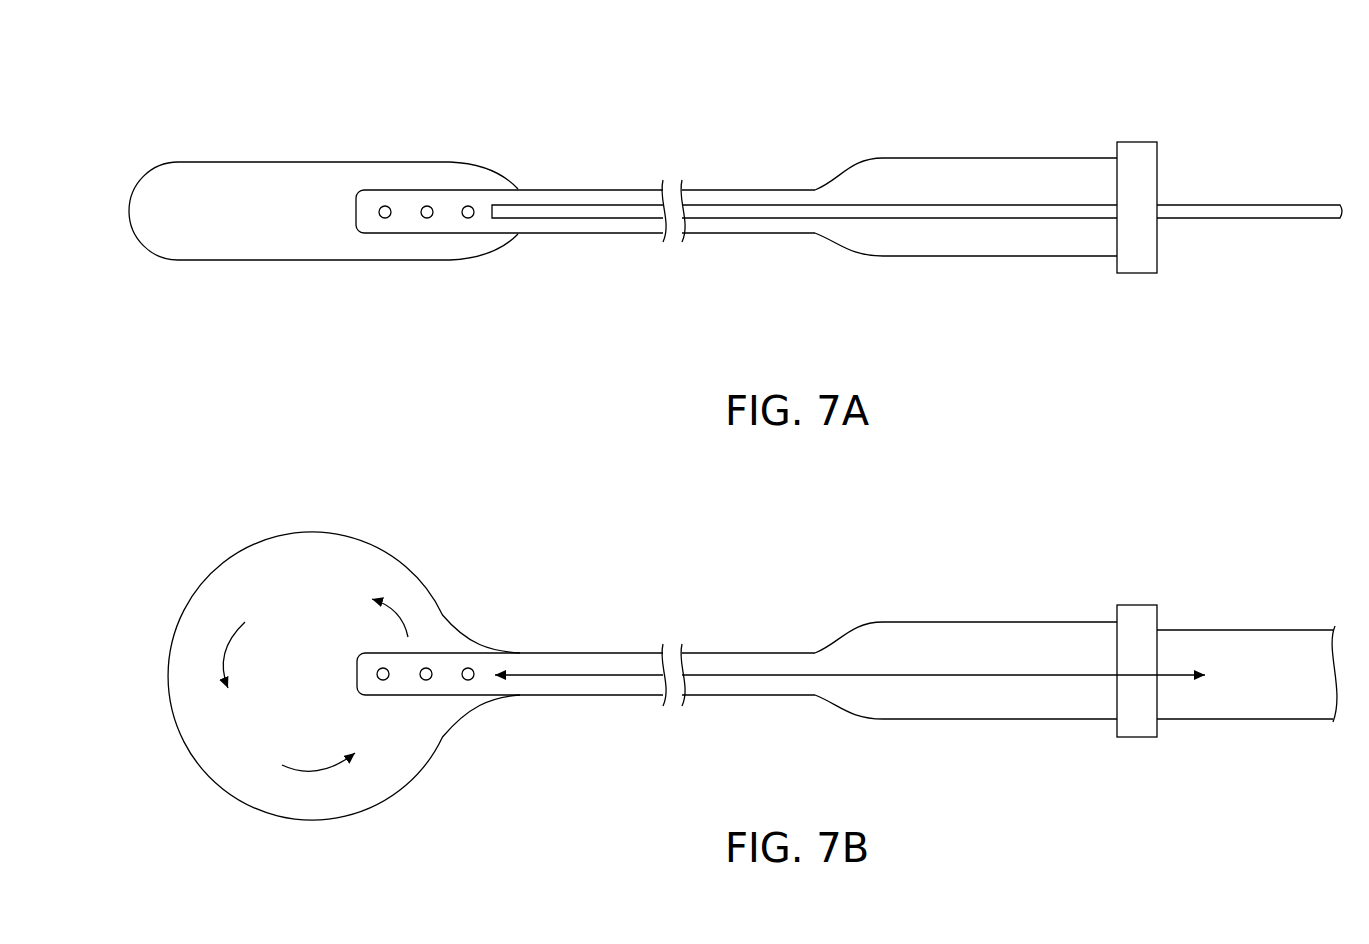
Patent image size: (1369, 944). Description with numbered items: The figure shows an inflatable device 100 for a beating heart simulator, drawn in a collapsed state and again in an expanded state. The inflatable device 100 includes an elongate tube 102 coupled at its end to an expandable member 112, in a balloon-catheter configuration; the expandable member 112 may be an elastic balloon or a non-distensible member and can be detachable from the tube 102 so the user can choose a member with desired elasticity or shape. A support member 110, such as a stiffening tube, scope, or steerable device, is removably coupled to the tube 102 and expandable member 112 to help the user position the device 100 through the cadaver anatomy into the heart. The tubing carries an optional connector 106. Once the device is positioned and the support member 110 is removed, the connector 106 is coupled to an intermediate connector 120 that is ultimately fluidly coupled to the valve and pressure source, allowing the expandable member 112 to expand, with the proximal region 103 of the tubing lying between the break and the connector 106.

In FIG. 7A, the inflatable device 100 is at (806, 106).
In FIG. 7B, the inflatable device 100 is at (812, 579).
In FIG. 7A, the elongate tube 102 is at (580, 190).
In FIG. 7A, the proximal balloon 103 is at (920, 254).
In FIG. 7B, the proximal balloon 103 is at (955, 628).
In FIG. 7A, the connector 106 is at (1137, 160).
In FIG. 7B, the connector 106 is at (1137, 622).
In FIG. 7A, the support member 110 is at (606, 219).
In FIG. 7A, the expandable member 112 is at (272, 243).
In FIG. 7B, the expandable member 112 is at (325, 546).
In FIG. 7B, the intermediate connector 120 is at (1250, 645).